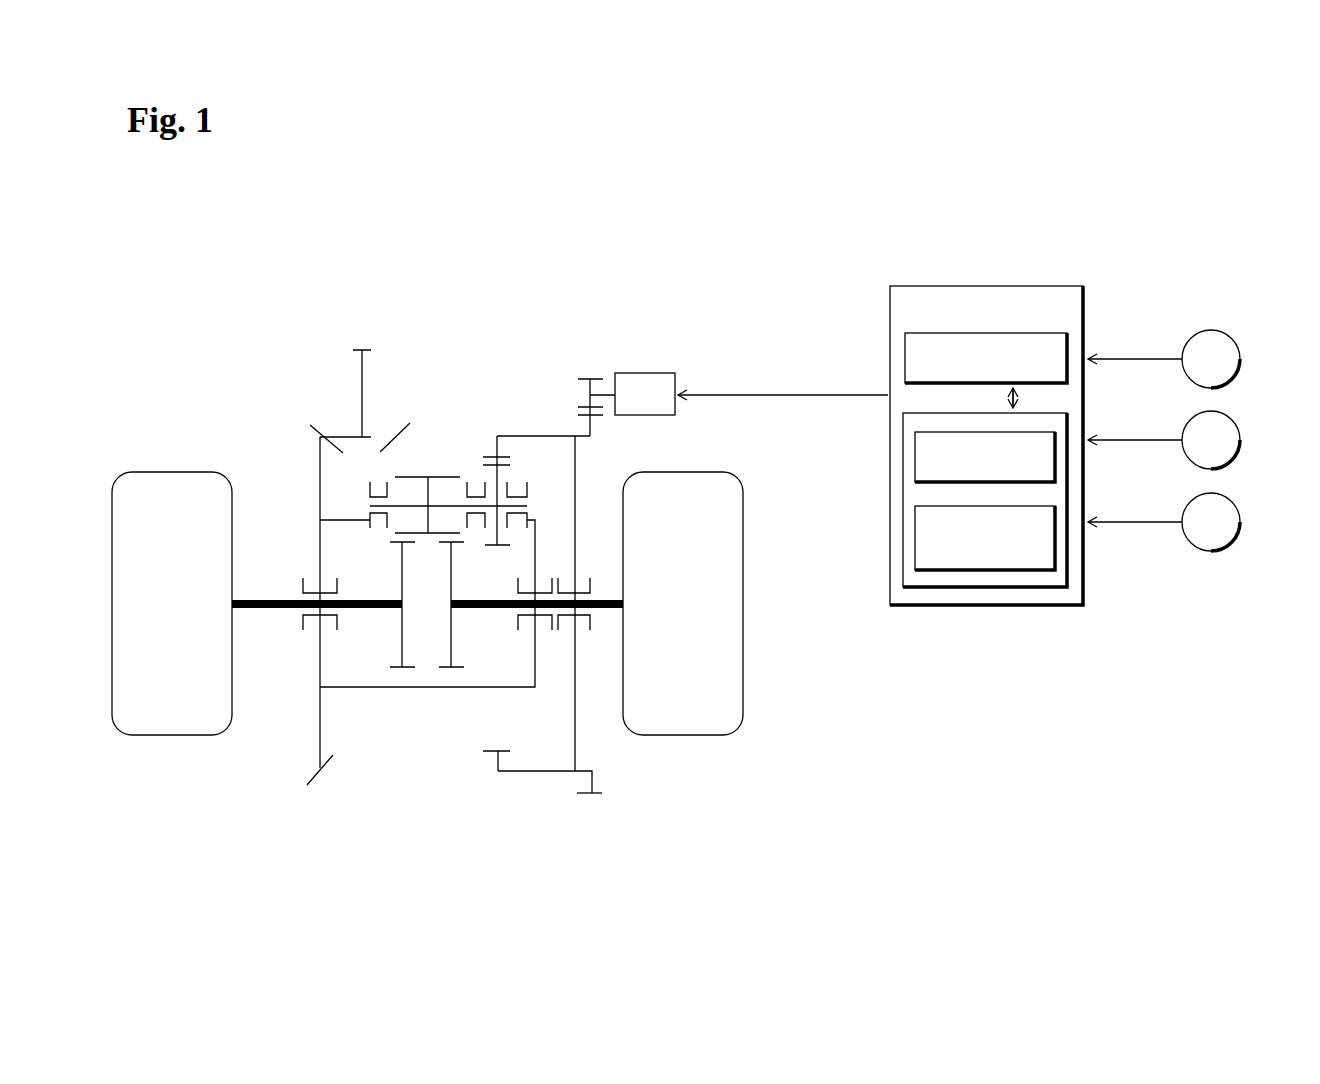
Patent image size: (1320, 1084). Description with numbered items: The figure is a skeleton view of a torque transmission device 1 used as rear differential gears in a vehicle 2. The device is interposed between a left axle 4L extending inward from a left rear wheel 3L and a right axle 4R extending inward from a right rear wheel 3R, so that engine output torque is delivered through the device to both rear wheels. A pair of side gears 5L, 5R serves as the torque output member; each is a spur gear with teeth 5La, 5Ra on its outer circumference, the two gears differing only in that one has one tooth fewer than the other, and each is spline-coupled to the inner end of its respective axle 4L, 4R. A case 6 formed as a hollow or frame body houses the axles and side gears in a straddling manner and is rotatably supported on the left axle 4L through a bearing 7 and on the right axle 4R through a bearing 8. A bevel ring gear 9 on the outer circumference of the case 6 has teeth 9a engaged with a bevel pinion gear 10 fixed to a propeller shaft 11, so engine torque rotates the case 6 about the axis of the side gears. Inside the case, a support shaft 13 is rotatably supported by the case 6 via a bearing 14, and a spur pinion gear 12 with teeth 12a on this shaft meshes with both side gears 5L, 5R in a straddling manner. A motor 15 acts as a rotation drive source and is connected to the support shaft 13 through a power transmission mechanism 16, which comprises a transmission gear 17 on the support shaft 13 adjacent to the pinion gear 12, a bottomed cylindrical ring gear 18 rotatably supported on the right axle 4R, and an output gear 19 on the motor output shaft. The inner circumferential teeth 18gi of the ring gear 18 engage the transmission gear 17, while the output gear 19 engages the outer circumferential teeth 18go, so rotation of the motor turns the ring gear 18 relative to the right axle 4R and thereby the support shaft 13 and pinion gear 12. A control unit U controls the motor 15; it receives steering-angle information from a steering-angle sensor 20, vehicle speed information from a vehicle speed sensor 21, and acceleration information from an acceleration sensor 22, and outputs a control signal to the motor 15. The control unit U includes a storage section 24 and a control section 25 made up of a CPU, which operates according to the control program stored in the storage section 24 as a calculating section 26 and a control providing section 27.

The torque transmission device 1 is at (690, 243).
The vehicle 2 is at (532, 592).
The left rear wheel 3L is at (150, 727).
The right rear wheel 3R is at (705, 727).
The left axle 4L is at (262, 612).
The right axle 4R is at (607, 612).
The left side gear 5L is at (403, 635).
The teeth of left side gear 5La is at (393, 668).
The right side gear 5R is at (451, 635).
The teeth of right side gear 5Ra is at (443, 668).
The case 6 is at (350, 688).
The bearing 7 is at (303, 583).
The bearing 8 is at (518, 620).
The ring gear 9 is at (318, 733).
The teeth of ring gear 9a is at (312, 438).
The pinion gear 10 is at (330, 432).
The propeller shaft 11 is at (360, 372).
The pinion gear 12 is at (438, 476).
The teeth of pinion gear 12a is at (445, 504).
The support shaft 13 is at (487, 476).
The bearing 14 is at (425, 470).
The motor 15 is at (652, 379).
The power transmission mechanism 16 is at (580, 459).
The transmission gear 17 is at (503, 472).
The ring gear 18 is at (532, 772).
The inner circumferential teeth 18gi is at (482, 742).
The outer circumferential teeth 18go is at (598, 795).
The output gear 19 is at (595, 379).
The steering-angle sensor 20 is at (1228, 345).
The vehicle speed sensor 21 is at (1228, 426).
The acceleration sensor 22 is at (1228, 508).
The storage section 24 is at (910, 347).
The control section 25 is at (913, 423).
The calculating section 26 is at (1045, 473).
The control providing section 27 is at (1045, 553).
The control unit U is at (1018, 297).